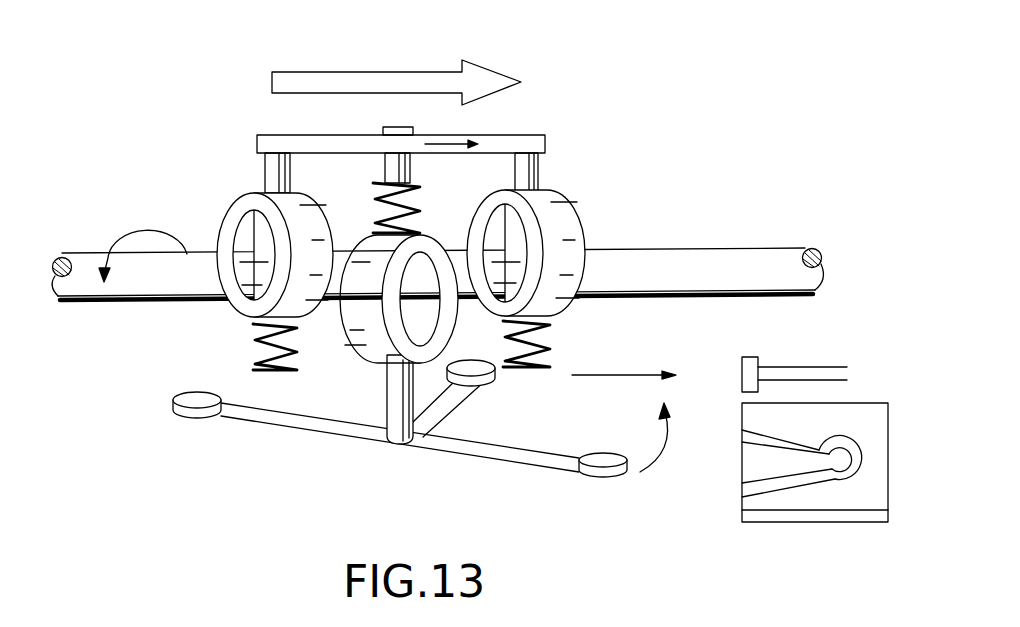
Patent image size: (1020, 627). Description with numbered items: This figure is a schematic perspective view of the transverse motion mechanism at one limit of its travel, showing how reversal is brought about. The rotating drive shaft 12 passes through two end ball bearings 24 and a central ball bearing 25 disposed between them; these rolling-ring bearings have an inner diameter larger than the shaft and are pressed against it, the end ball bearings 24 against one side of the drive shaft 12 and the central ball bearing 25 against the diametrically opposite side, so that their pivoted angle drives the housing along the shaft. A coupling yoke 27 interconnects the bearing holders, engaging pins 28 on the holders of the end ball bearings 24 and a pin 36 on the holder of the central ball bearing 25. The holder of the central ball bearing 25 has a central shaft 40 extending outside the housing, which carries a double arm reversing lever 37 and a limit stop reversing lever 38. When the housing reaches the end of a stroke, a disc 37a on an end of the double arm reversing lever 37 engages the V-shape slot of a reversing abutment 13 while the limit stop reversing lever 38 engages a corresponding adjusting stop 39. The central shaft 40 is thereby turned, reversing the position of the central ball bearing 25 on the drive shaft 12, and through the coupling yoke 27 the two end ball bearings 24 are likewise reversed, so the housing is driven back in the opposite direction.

The drive shaft 12 is at (695, 258).
The reversing abutment 13 is at (840, 497).
The end ball bearing 24 is at (243, 312).
The central ball bearing 25 is at (368, 355).
The coupling yoke 27 is at (512, 142).
The pin 28 is at (278, 185).
The pin 36 is at (394, 128).
The double arm reversing lever 37 is at (441, 466).
The disc 37a is at (195, 410).
The limit stop reversing lever 38 is at (478, 380).
The adjusting stop 39 is at (760, 362).
The central shaft 40 is at (400, 412).